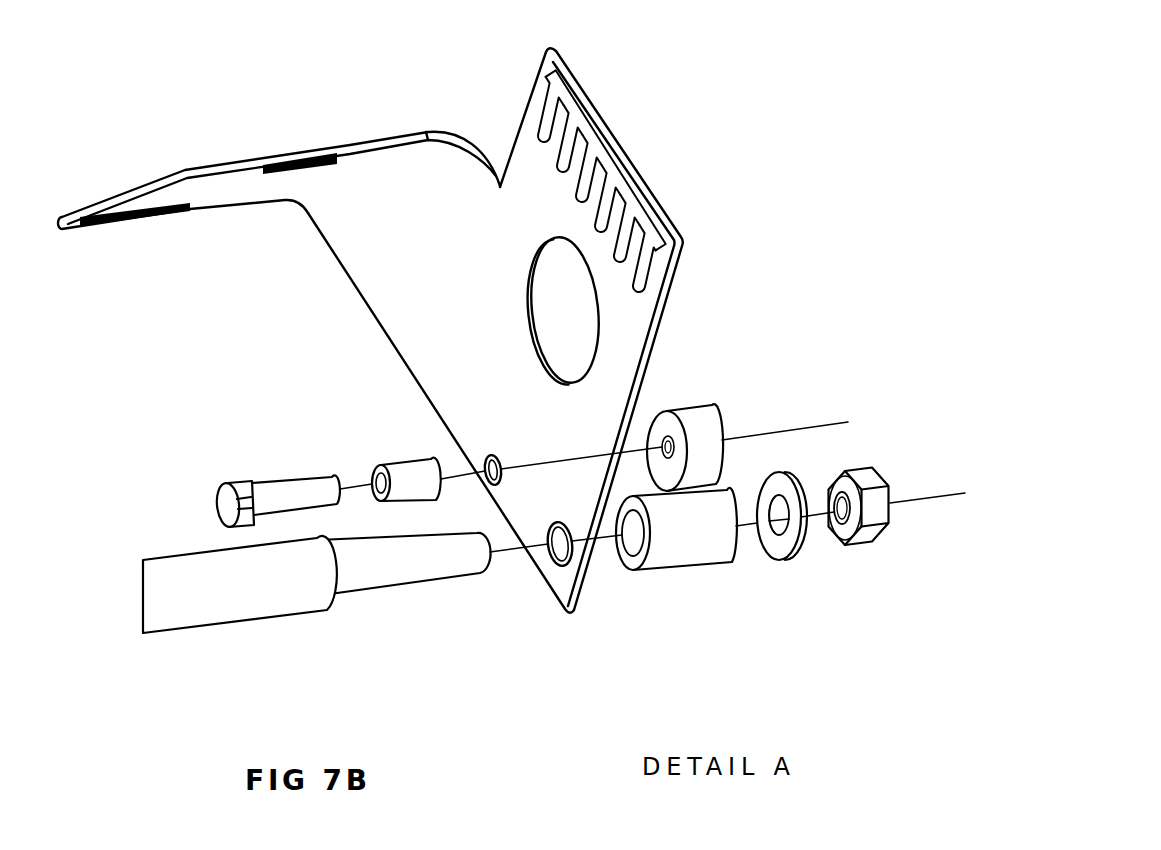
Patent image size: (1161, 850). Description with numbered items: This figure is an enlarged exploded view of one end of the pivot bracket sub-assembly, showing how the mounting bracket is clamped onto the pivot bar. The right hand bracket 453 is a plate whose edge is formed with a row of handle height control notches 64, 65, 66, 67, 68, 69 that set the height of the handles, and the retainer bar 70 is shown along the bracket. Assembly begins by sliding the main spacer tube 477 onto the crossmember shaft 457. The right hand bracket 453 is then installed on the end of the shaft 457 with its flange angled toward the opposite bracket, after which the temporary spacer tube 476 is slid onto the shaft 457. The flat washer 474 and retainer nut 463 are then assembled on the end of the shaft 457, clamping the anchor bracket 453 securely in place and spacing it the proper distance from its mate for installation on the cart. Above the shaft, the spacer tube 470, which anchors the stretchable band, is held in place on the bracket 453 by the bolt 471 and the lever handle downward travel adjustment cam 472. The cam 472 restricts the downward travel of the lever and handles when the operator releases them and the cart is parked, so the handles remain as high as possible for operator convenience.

The retainer bar 70 is at (618, 127).
The right hand bracket 453 is at (687, 245).
The handle height control notch 64 is at (632, 282).
The handle height control notch 65 is at (570, 138).
The handle height control notch 66 is at (589, 168).
The handle height control notch 67 is at (608, 198).
The handle height control notch 68 is at (627, 228).
The handle height control notch 69 is at (644, 258).
The bolt 471 is at (284, 481).
The spacer tube 470 is at (398, 457).
The lever handle downward travel adjustment cam 472 is at (705, 410).
The temporary spacer tube 476 is at (699, 571).
The flat washer 474 is at (789, 563).
The retainer nut 463 is at (858, 547).
The crossmember shaft 457 is at (404, 587).
The main spacer tube 477 is at (188, 629).